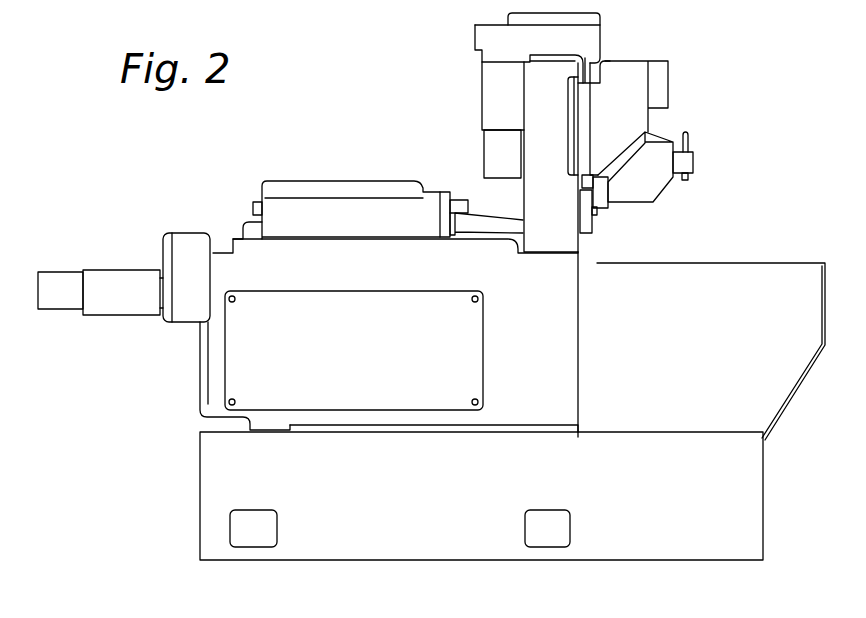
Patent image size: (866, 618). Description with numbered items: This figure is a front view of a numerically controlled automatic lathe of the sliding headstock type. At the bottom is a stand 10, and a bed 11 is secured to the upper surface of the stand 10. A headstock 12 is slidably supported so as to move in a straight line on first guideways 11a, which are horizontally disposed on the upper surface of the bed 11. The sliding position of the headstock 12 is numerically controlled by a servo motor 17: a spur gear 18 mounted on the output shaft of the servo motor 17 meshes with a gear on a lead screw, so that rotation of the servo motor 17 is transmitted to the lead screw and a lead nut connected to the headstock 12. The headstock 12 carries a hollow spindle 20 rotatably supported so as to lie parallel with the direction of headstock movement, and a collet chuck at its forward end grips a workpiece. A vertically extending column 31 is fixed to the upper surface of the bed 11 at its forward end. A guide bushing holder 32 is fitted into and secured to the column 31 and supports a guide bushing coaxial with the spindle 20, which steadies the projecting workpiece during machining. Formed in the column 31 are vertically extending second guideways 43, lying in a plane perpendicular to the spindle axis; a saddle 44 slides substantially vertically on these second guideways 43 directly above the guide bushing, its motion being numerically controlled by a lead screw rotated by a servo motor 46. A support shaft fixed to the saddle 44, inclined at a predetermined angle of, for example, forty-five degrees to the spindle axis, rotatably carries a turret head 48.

The stand 10 is at (350, 550).
The bed 11 is at (233, 376).
The first guideways 11a is at (243, 242).
The headstock 12 is at (367, 203).
The servo motor 17 is at (128, 275).
The spur gear 18 is at (183, 240).
The hollow spindle 20 is at (462, 203).
The column 31 is at (535, 123).
The guide bushing holder 32 is at (592, 227).
The second guideways 43 is at (592, 76).
The saddle 44 is at (643, 80).
The servo motor 46 is at (487, 73).
The turret head 48 is at (667, 163).